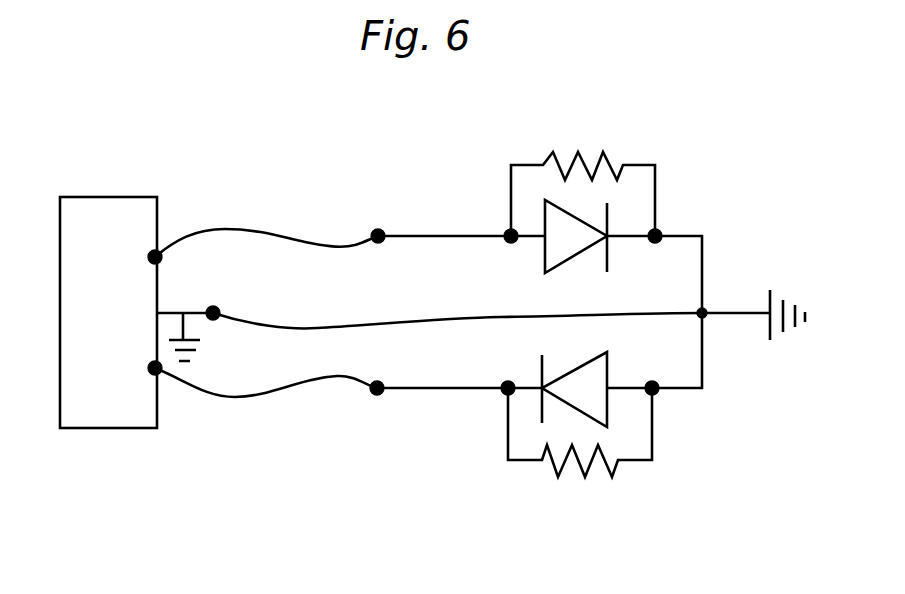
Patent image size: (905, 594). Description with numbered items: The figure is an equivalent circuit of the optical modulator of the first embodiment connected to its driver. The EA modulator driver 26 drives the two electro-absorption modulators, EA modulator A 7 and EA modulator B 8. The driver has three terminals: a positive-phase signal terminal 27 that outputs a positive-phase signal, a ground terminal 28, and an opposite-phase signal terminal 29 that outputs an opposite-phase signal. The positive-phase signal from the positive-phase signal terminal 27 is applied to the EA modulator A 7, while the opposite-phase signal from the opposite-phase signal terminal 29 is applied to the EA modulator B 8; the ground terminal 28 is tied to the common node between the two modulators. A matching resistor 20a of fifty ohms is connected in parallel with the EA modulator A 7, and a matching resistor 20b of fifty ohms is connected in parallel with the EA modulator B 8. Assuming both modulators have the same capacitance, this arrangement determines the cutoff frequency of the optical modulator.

The EA modulator driver 26 is at (92, 198).
The positive-phase signal terminal 27 is at (156, 256).
The ground terminal 28 is at (168, 307).
The opposite-phase signal terminal 29 is at (158, 368).
The EA modulator A 7 is at (557, 258).
The EA modulator B 8 is at (587, 375).
The matching resistor 20a is at (610, 153).
The matching resistor 20b is at (550, 472).